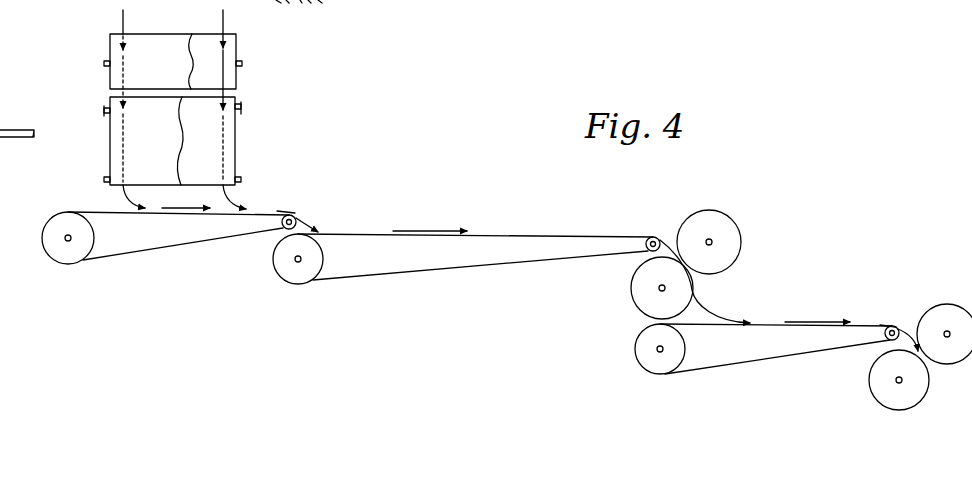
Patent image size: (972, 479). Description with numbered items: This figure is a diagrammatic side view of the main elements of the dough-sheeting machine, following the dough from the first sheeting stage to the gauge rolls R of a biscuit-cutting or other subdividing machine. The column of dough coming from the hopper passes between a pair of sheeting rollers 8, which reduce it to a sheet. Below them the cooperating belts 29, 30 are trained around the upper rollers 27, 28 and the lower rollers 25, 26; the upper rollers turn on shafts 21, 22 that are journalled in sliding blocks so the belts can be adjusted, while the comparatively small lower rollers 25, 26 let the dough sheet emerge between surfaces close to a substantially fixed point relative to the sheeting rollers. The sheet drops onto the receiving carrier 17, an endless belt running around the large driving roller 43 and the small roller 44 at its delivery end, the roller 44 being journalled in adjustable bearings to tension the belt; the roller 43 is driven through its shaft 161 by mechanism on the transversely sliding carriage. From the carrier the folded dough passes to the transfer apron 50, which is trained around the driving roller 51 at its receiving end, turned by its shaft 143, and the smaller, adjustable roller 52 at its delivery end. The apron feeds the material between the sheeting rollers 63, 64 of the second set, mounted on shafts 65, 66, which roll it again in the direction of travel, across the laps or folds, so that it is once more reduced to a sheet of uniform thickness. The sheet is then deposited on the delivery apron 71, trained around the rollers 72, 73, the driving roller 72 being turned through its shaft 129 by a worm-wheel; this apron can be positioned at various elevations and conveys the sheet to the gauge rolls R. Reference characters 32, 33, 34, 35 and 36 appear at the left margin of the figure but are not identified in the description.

The sheeting rollers 8 is at (197, 34).
The receiving carrier 17 is at (108, 211).
The shaft of upper roller 21 is at (106, 112).
The shaft of upper roller 22 is at (242, 111).
The lower roller 25 is at (107, 178).
The lower roller 26 is at (240, 178).
The upper roller 27 is at (108, 107).
The upper roller 28 is at (240, 107).
The cooperating belt 29 is at (172, 141).
The cooperating belt 30 is at (0, 30).
The element 32 is at (0, 50).
The element 33 is at (0, 10).
The element 34 is at (0, 96).
The element 35 is at (0, 78).
The bar 36 is at (23, 131).
The driving roller 43 is at (45, 244).
The small roller 44 is at (295, 217).
The transfer apron 50 is at (365, 236).
The driving roller 51 is at (288, 274).
The smaller roller 52 is at (655, 237).
The sheeting roller 63 is at (633, 284).
The sheeting roller 64 is at (722, 226).
The shaft 65 is at (658, 291).
The shaft 66 is at (713, 242).
The delivery apron 71 is at (758, 325).
The roller 72 is at (636, 354).
The roller 73 is at (894, 326).
The shaft 129 is at (660, 353).
The shaft 143 is at (295, 260).
The shaft 161 is at (67, 242).
The gauge rolls R is at (912, 380).